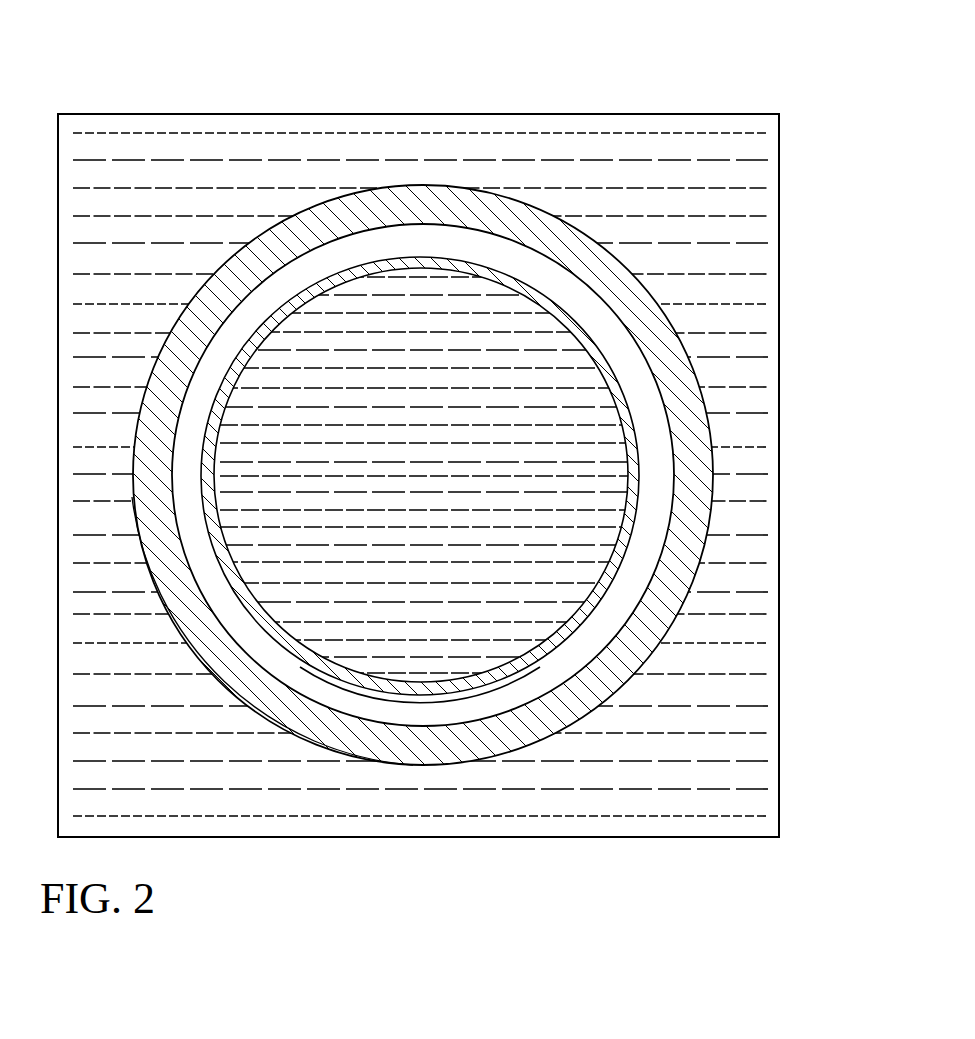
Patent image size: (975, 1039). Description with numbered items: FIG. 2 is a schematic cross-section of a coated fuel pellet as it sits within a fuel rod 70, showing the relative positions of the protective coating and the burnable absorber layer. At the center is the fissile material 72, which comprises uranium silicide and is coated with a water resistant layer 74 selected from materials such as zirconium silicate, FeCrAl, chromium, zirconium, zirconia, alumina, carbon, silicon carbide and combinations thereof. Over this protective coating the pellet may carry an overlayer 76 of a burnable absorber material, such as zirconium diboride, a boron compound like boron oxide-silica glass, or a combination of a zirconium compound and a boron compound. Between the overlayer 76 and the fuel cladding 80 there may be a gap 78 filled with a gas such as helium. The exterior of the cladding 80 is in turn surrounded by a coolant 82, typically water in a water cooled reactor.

The fuel rod 70 is at (116, 108).
The fissile material 72 is at (480, 633).
The water resistant layer 74 is at (627, 488).
The overlayer 76 is at (398, 690).
The gap 78 is at (630, 573).
The fuel cladding 80 is at (689, 398).
The coolant 82 is at (730, 228).